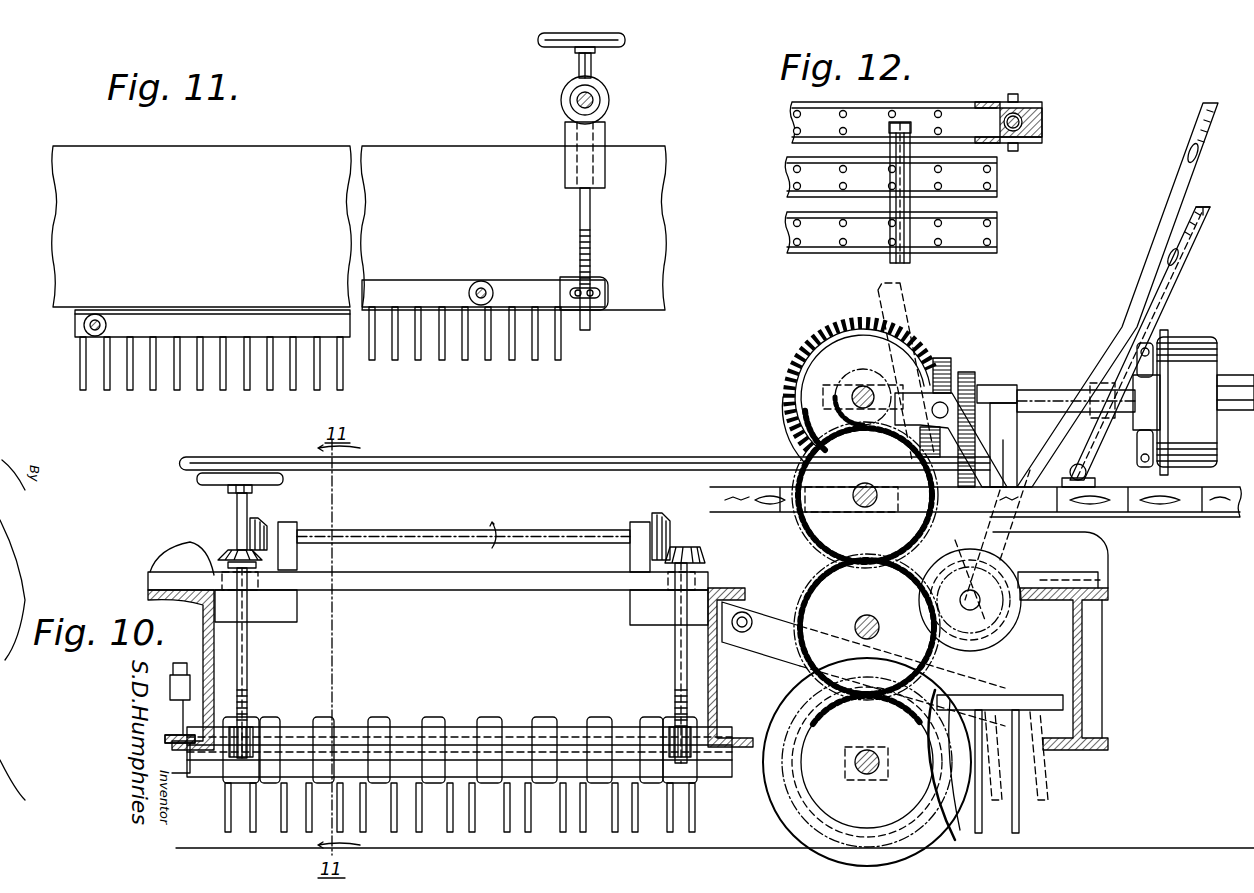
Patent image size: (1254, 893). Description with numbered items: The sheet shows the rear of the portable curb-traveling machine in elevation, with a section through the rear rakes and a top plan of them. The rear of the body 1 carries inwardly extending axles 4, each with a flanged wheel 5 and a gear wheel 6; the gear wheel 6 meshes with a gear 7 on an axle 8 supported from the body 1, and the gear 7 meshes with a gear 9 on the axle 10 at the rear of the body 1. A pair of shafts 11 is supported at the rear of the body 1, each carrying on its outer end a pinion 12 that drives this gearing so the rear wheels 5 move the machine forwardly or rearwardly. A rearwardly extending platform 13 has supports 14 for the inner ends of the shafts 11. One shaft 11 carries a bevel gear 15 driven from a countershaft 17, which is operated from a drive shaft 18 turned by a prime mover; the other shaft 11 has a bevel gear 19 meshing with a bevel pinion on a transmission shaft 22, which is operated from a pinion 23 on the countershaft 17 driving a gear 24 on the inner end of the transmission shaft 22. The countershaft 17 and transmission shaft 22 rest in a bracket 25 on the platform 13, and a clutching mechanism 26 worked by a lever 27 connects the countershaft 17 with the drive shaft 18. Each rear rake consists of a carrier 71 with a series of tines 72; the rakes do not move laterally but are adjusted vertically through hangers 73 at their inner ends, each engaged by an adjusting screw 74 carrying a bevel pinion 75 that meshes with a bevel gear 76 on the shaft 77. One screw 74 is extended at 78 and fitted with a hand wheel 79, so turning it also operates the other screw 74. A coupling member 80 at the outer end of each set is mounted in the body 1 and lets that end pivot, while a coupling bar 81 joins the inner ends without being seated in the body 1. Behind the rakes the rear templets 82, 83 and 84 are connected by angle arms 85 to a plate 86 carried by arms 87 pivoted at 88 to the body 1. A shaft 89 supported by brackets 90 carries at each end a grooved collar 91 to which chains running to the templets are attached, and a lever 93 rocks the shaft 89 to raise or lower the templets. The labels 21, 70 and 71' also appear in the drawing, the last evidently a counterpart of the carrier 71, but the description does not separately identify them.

In FIG. 11, the body 1 is at (63, 254).
In FIG. 10, the body 1 is at (722, 728).
In FIG. 10, the rear axle 4 is at (864, 775).
In FIG. 10, the flanged wheel 5 is at (765, 792).
In FIG. 10, the gear wheel 6 is at (867, 760).
In FIG. 10, the gear 7 is at (822, 585).
In FIG. 10, the axle 8 is at (855, 624).
In FIG. 10, the gear 9 is at (802, 522).
In FIG. 10, the axle 10 is at (860, 507).
In FIG. 10, the shaft 11 is at (865, 386).
In FIG. 10, the pinion 12 is at (838, 412).
In FIG. 10, the platform 13 is at (1215, 490).
In FIG. 10, the support 14 is at (800, 440).
In FIG. 10, the bevel gear 15 is at (808, 346).
In FIG. 10, the countershaft 17 is at (1046, 390).
In FIG. 10, the drive shaft 18 is at (1230, 384).
In FIG. 11, the bevel gear 19 is at (538, 41).
In FIG. 10, the ring gear rim 21 is at (795, 377).
In FIG. 10, the transmission shaft 22 is at (586, 457).
In FIG. 10, the pinion 23 is at (966, 372).
In FIG. 10, the gear 24 is at (1012, 458).
In FIG. 10, the bracket 25 is at (997, 398).
In FIG. 10, the clutching mechanism 26 is at (1163, 345).
In FIG. 10, the lever 27 is at (1158, 227).
In FIG. 10, the bevel gear half 70 is at (953, 407).
In FIG. 11, the carrier 71 is at (340, 308).
In FIG. 10, the carrier 71 is at (951, 440).
In FIG. 12, the tine bar 71' is at (893, 189).
In FIG. 10, the tine bar 71' is at (459, 799).
In FIG. 11, the tines 72 is at (186, 390).
In FIG. 12, the tines 72 is at (847, 115).
In FIG. 10, the tines 72 is at (422, 833).
In FIG. 11, the hanger 73 is at (566, 280).
In FIG. 12, the hanger 73 is at (1036, 140).
In FIG. 10, the hanger 73 is at (248, 716).
In FIG. 11, the adjusting screw 74 is at (579, 210).
In FIG. 12, the adjusting screw 74 is at (1043, 119).
In FIG. 10, the adjusting screw 74 is at (222, 655).
In FIG. 10, the bevel pinion 75 is at (220, 553).
In FIG. 11, the bevel gear 76 is at (609, 106).
In FIG. 10, the bevel gear 76 is at (262, 522).
In FIG. 11, the shaft 77 is at (598, 95).
In FIG. 10, the shaft 77 is at (406, 530).
In FIG. 11, the screw extension 78 is at (577, 67).
In FIG. 10, the screw extension 78 is at (217, 514).
In FIG. 10, the hand wheel 79 is at (246, 473).
In FIG. 11, the coupling member 80 is at (84, 326).
In FIG. 10, the coupling member 80 is at (408, 726).
In FIG. 11, the coupling bar 81 is at (483, 283).
In FIG. 12, the coupling bar 81 is at (911, 176).
In FIG. 10, the coupling bar 81 is at (460, 725).
In FIG. 10, the rear templet 82 is at (945, 828).
In FIG. 10, the rear templet 83 is at (982, 834).
In FIG. 10, the rear templet 84 is at (1020, 828).
In FIG. 10, the angle arm 85 is at (1032, 756).
In FIG. 10, the plate 86 is at (1050, 702).
In FIG. 10, the arm 87 is at (768, 635).
In FIG. 10, the pivot 88 is at (745, 611).
In FIG. 10, the shaft 89 is at (970, 610).
In FIG. 10, the bracket 90 is at (1050, 641).
In FIG. 10, the grooved collar 91 is at (963, 548).
In FIG. 10, the lever 93 is at (1165, 282).